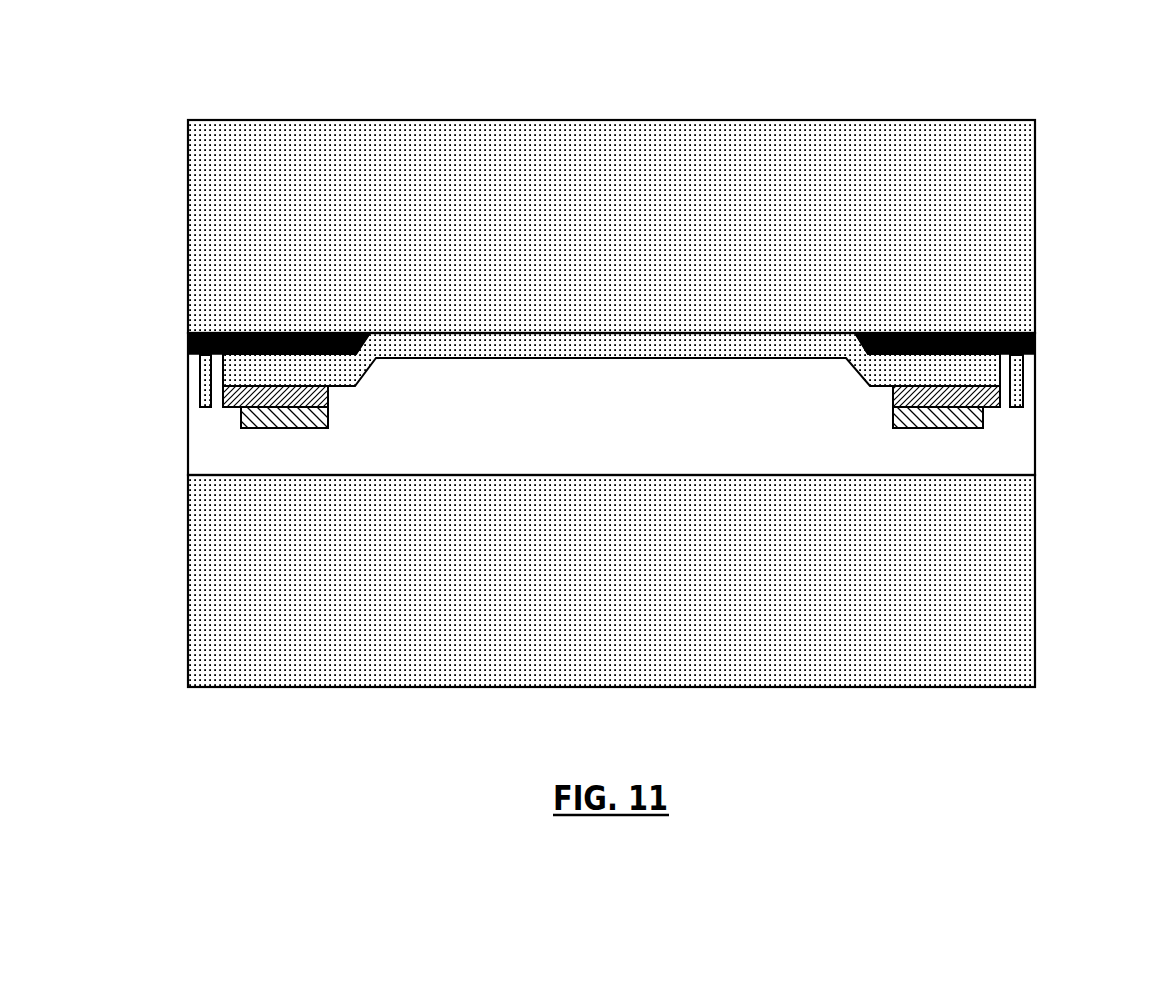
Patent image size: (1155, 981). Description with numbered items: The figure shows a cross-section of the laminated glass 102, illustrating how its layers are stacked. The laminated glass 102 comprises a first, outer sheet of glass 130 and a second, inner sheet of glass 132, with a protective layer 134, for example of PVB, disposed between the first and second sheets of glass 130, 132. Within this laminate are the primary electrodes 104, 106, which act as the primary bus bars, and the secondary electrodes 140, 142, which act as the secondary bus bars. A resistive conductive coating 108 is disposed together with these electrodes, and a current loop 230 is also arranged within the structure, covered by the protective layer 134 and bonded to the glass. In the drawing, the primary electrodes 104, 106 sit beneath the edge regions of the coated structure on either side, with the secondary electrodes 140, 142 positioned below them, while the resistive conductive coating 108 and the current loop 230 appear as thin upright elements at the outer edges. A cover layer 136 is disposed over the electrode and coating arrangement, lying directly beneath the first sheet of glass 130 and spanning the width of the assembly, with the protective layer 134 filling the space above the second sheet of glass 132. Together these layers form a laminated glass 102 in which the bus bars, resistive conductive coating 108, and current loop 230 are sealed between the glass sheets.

The laminated glass 102 is at (608, 72).
The first sheet of glass 130 is at (1027, 218).
The second sheet of glass 132 is at (1027, 570).
The protective layer 134 is at (1027, 437).
The cover layer 136 is at (1027, 335).
The resistive conductive coating 108 is at (215, 360).
The current loop 230 is at (1010, 352).
The primary electrode 104 is at (215, 390).
The primary electrode 106 is at (992, 387).
The secondary electrode 140 is at (235, 412).
The secondary electrode 142 is at (975, 410).